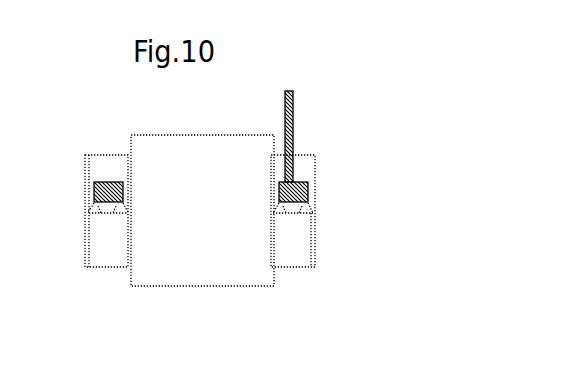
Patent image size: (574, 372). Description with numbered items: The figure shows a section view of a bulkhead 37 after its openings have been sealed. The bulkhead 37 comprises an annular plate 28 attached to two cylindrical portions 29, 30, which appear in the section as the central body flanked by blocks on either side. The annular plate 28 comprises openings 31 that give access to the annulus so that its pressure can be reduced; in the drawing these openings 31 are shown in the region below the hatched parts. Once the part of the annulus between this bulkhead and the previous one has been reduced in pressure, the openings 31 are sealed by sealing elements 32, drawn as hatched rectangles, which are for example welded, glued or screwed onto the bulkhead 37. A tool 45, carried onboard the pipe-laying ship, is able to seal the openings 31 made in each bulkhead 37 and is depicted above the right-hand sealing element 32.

The cylindrical portion 29 is at (132, 147).
The cylindrical portion 30 is at (89, 164).
The sealing element 32 is at (95, 192).
The annular plate 28 is at (94, 213).
The opening 31 is at (107, 220).
The bulkhead 37 is at (355, 131).
The tool 45 is at (290, 119).